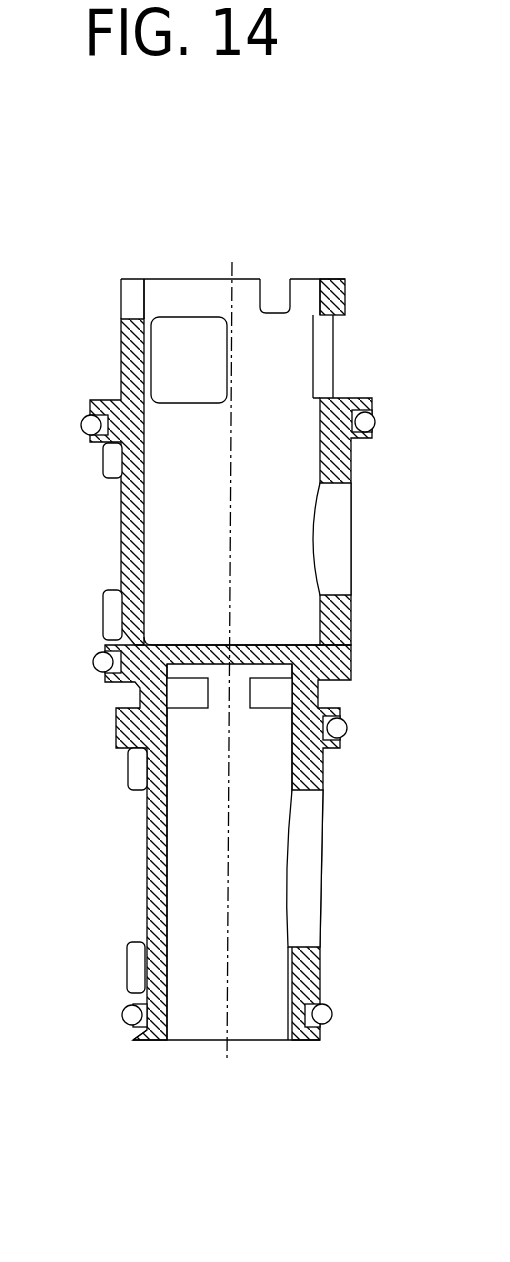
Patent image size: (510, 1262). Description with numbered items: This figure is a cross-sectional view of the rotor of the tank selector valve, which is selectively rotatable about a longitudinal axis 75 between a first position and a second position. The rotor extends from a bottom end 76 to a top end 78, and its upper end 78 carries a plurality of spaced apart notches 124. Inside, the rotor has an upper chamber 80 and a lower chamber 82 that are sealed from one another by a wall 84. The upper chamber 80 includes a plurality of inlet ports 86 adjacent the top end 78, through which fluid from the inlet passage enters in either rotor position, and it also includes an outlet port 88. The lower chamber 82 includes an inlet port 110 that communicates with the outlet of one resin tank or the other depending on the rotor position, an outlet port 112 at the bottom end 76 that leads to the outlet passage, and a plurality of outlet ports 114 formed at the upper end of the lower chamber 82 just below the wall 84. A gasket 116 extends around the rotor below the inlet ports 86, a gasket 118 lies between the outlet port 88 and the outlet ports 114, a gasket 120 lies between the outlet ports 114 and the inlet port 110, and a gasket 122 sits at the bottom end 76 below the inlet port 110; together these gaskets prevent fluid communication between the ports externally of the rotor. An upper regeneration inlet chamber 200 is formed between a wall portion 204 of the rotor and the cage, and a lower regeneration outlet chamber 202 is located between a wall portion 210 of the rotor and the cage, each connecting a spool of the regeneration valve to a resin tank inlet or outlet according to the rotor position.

The longitudinal axis 75 is at (232, 1043).
The bottom end 76 is at (132, 1040).
The top end 78 is at (121, 282).
The upper chamber 80 is at (167, 532).
The lower chamber 82 is at (187, 890).
The wall 84 is at (243, 645).
The inlet ports 86 is at (228, 366).
The outlet port 88 is at (332, 537).
The inlet port 110 is at (305, 882).
The outlet port 112 is at (172, 1042).
The outlet ports 114 is at (262, 710).
The gasket 116 is at (375, 428).
The gasket 118 is at (362, 662).
The gasket 120 is at (350, 733).
The gasket 122 is at (332, 1017).
The notches 124 is at (280, 285).
The upper regeneration inlet chamber 200 is at (120, 510).
The lower regeneration outlet chamber 202 is at (147, 813).
The wall portion 204 is at (120, 492).
The wall portion 210 is at (147, 858).